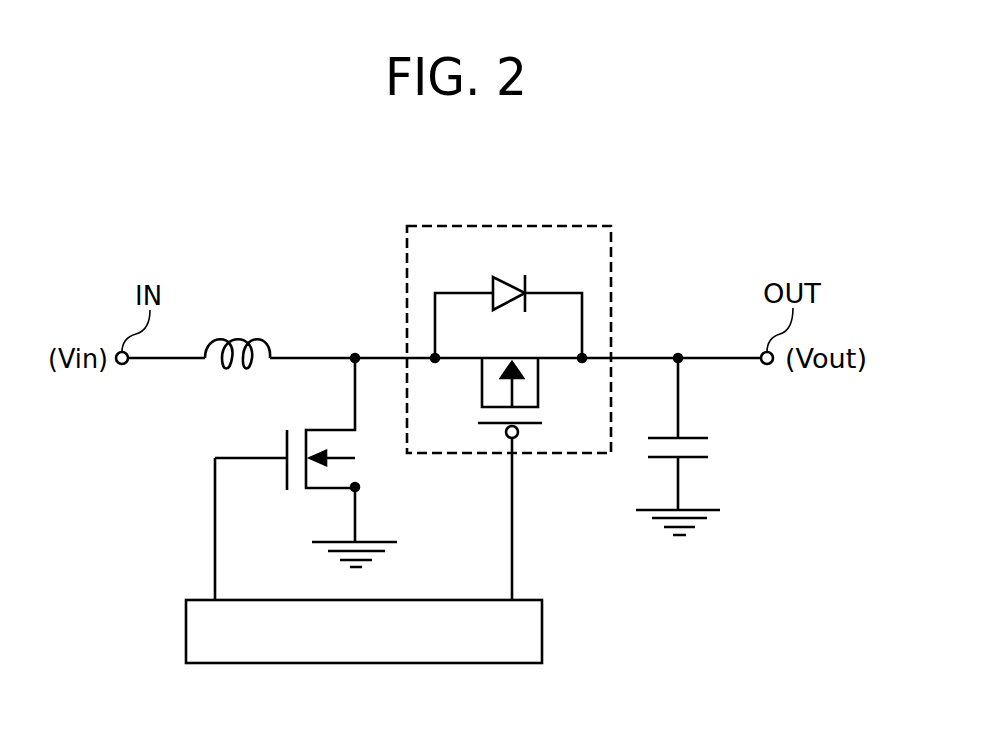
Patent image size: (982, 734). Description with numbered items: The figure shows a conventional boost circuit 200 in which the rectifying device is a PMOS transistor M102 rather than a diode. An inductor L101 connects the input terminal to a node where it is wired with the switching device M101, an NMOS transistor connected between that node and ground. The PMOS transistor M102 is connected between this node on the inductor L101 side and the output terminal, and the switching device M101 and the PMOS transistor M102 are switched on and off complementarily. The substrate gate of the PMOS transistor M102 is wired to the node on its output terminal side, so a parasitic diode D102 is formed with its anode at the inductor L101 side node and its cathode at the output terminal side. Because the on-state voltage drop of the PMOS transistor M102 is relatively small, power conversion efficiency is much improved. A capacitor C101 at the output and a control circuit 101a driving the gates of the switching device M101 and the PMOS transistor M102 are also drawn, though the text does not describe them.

The boost circuit 200 is at (636, 207).
The PMOS transistor M102 is at (616, 263).
The parasitic diode D102 is at (508, 300).
The inductor L101 is at (237, 334).
The switching device M101 is at (306, 479).
The output capacitor C101 is at (691, 446).
The control circuit 101a is at (542, 632).